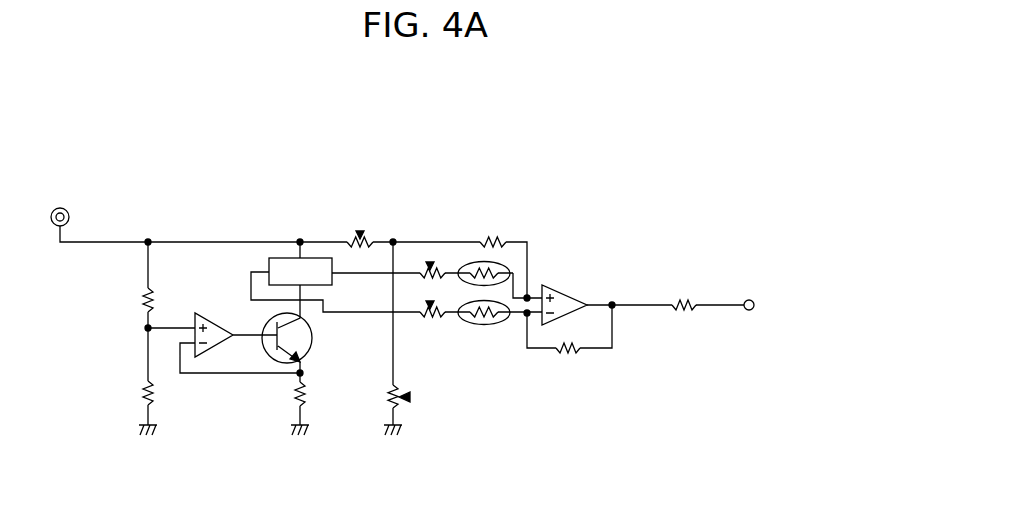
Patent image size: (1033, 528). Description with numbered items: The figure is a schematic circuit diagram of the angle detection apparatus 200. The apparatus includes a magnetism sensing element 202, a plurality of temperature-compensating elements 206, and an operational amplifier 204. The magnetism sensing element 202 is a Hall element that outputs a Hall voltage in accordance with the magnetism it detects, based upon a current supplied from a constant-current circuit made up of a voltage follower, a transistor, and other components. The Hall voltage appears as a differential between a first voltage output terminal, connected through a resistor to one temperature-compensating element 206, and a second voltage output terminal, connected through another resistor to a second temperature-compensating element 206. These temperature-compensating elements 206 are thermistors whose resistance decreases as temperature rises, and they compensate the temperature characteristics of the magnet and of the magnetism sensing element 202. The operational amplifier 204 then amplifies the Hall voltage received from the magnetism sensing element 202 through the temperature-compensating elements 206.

The angle detection apparatus 200 is at (645, 172).
The magnetism sensing element 202 is at (285, 258).
The operational amplifier 204 is at (575, 292).
The temperature-compensating element 206 is at (500, 284).